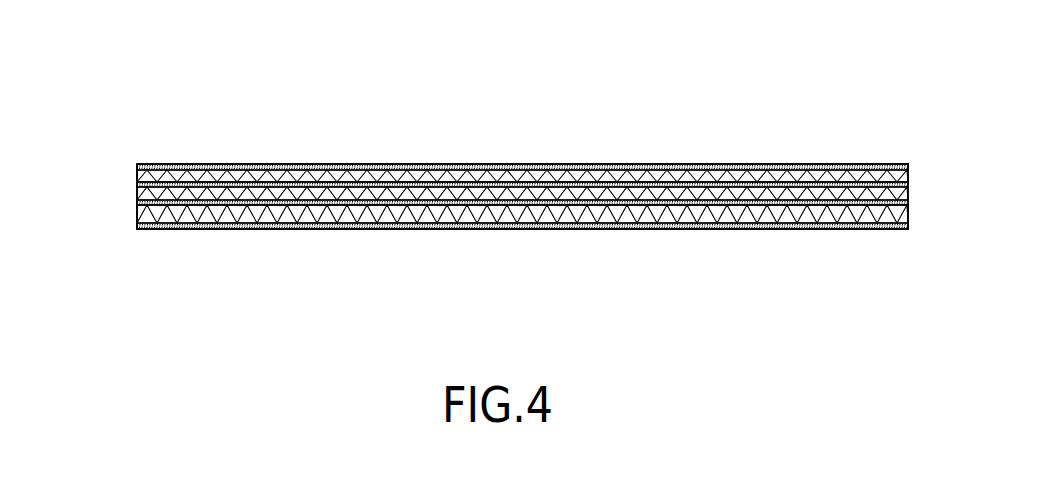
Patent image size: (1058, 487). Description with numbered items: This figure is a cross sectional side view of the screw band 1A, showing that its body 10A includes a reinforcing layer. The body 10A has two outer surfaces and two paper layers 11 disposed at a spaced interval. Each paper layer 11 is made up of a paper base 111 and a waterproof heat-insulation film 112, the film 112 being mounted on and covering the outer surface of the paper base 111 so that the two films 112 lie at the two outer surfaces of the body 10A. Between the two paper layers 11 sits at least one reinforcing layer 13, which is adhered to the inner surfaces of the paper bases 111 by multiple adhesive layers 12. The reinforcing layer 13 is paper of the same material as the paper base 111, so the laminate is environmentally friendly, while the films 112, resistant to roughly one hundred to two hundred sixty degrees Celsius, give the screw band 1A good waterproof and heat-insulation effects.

The screw band 1A is at (668, 106).
The body 10A is at (514, 133).
The paper layer 11 is at (127, 166).
The paper base 111 is at (314, 178).
The waterproof heat-insulation film 112 is at (198, 164).
The adhesive layer 12 is at (403, 185).
The reinforcing layer 13 is at (138, 196).